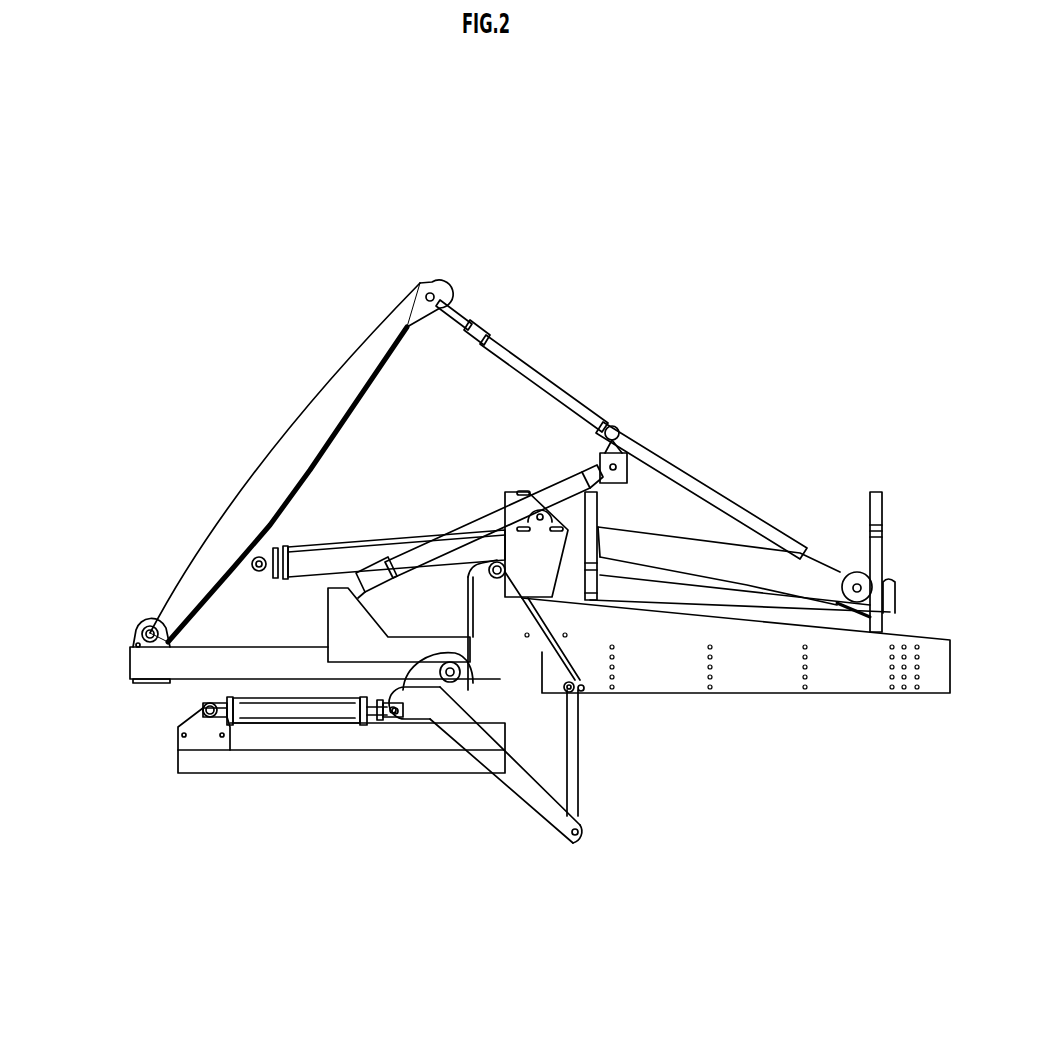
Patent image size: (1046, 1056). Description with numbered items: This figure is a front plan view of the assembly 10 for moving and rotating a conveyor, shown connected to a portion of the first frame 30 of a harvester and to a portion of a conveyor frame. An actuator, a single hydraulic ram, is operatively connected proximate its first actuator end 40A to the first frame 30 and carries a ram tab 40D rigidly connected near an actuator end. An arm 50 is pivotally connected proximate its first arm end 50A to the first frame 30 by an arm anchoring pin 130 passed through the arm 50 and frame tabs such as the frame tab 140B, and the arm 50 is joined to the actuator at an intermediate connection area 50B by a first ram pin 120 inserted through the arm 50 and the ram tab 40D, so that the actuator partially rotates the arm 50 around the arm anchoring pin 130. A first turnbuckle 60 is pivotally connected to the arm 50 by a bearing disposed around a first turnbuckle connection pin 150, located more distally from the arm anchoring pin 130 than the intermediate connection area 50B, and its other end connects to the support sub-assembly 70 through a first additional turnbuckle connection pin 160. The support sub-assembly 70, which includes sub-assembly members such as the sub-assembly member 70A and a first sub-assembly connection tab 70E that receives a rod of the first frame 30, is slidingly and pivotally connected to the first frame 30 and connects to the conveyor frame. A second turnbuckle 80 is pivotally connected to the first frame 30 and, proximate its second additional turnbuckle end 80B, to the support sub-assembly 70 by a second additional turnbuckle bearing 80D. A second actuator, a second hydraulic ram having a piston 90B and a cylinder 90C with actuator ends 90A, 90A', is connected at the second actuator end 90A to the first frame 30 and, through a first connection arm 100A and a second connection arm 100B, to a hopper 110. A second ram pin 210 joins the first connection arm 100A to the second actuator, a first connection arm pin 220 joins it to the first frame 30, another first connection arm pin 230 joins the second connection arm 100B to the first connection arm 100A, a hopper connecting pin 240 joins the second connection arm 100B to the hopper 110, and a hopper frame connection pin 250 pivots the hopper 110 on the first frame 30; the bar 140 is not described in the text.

The assembly 10 is at (582, 298).
The first frame 30 is at (175, 683).
The first actuator end 40A is at (165, 683).
The ram tab 40D is at (265, 562).
The arm 50 is at (268, 470).
The first arm end 50A is at (137, 633).
The intermediate connection area 50B is at (212, 592).
The first turnbuckle 60 is at (563, 390).
The support sub-assembly 70 is at (612, 523).
The sub-assembly member 70A is at (753, 695).
The first sub-assembly connection tab 70E is at (620, 490).
The second turnbuckle 80 is at (487, 535).
The second additional turnbuckle end 80B is at (625, 480).
The second additional turnbuckle bearing 80D is at (622, 448).
The second actuator end 90A is at (254, 809).
The actuator end 90A' is at (293, 845).
The piston 90B is at (197, 752).
The cylinder 90C is at (337, 730).
The first connection arm 100A is at (547, 812).
The second connection arm 100B is at (584, 807).
The hopper 110 is at (710, 695).
The first ram pin 120 is at (252, 562).
The arm anchoring pin 130 is at (152, 650).
The support bar 140 is at (372, 544).
The frame tab 140B is at (153, 625).
The first turnbuckle connection pin 150 is at (443, 295).
The first additional turnbuckle connection pin 160 is at (848, 590).
The second ram pin 210 is at (390, 730).
The first connection arm pin 220 is at (425, 722).
The first connection arm pin 230 is at (523, 605).
The hopper connecting pin 240 is at (617, 695).
The hopper frame connection pin 250 is at (500, 782).